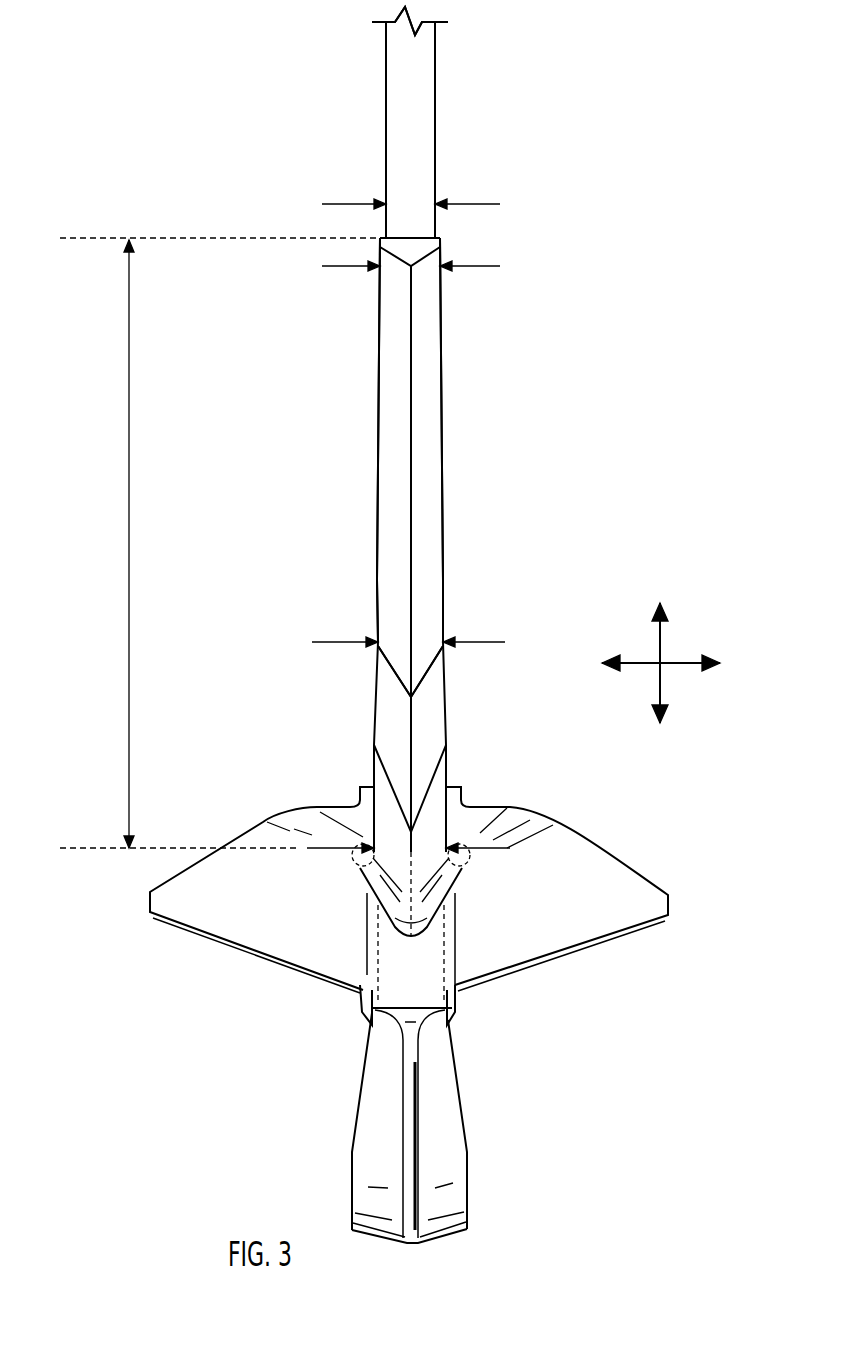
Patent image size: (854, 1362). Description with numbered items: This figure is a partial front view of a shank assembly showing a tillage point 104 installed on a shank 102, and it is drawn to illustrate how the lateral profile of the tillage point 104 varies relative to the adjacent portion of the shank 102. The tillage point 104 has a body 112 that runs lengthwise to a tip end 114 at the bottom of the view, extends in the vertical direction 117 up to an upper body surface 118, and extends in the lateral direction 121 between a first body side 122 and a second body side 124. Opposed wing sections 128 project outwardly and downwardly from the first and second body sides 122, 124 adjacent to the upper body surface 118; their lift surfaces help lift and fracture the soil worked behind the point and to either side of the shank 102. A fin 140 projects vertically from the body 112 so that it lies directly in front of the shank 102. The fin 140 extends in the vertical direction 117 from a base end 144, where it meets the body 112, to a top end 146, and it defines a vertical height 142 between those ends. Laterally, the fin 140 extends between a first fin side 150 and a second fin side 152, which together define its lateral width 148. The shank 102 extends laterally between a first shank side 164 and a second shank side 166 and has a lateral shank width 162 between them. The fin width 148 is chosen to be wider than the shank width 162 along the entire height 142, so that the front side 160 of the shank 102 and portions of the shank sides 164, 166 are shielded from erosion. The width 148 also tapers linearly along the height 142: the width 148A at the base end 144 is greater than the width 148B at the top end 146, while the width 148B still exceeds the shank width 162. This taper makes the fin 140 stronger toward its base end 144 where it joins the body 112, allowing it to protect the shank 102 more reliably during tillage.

The shank 102 is at (428, 156).
The tillage point 104 is at (515, 1008).
The body 112 is at (372, 1112).
The tip end 114 is at (408, 1242).
The vertical direction 117 is at (662, 642).
The upper body surface 118 is at (420, 984).
The lateral direction 121 is at (677, 666).
The first body side 122 is at (350, 1007).
The second body side 124 is at (460, 1015).
The wing section 128 is at (612, 903).
The fin 140 is at (428, 416).
The vertical height 142 is at (129, 543).
The base end 144 is at (462, 870).
The top end 146 is at (447, 246).
The lateral width 148 is at (483, 642).
The lateral width at base end 148A is at (472, 853).
The lateral width at top end 148B is at (350, 266).
The first fin side 150 is at (378, 468).
The second fin side 152 is at (443, 468).
The front side 160 is at (418, 48).
The lateral shank width 162 is at (473, 204).
The first shank side 164 is at (386, 95).
The second shank side 166 is at (435, 97).